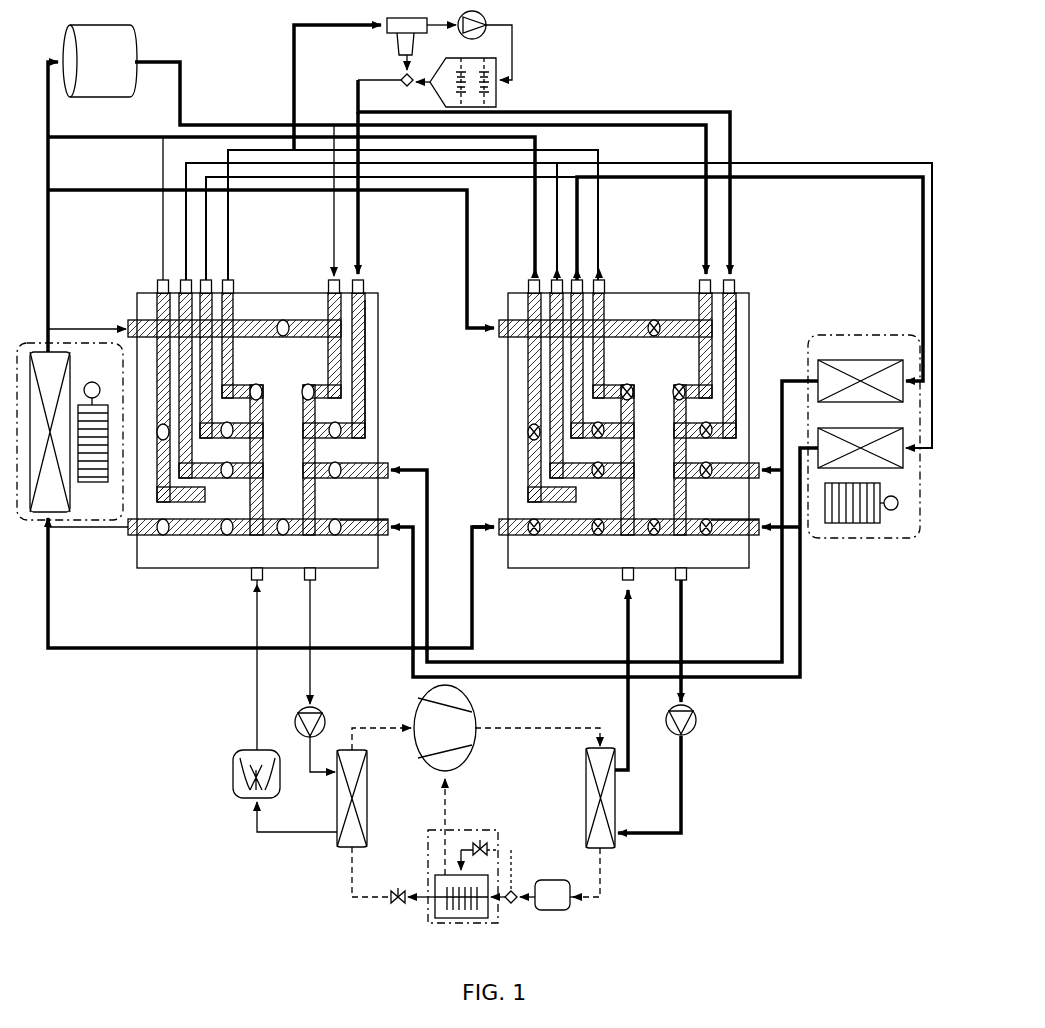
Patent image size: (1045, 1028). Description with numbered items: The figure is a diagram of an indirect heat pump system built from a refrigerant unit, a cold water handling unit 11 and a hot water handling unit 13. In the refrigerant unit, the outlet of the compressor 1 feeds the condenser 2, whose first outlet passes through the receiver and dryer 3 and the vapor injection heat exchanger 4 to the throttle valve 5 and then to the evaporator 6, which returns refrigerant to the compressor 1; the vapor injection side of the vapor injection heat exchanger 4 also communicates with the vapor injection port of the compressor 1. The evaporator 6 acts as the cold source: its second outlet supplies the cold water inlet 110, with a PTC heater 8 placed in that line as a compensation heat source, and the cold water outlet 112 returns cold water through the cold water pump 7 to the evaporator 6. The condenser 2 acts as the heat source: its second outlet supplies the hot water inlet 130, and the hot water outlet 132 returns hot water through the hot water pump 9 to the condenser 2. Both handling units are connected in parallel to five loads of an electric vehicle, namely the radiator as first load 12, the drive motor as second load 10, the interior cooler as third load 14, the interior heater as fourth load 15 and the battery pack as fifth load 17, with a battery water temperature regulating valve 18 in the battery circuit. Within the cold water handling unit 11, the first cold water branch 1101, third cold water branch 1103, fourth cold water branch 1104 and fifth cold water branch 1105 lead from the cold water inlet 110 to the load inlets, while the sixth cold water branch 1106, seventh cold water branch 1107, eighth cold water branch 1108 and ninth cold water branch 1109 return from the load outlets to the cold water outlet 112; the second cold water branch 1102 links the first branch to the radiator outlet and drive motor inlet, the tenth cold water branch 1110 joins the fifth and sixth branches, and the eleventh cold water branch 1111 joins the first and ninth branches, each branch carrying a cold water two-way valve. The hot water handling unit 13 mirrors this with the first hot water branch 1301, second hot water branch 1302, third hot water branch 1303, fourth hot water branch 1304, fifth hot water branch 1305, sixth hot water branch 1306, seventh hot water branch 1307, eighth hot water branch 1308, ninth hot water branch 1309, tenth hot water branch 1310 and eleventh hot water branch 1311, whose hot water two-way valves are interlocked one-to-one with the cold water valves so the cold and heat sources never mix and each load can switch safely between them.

The compressor 1 is at (450, 728).
The condenser 2 is at (592, 798).
The receiver and dryer 3 is at (552, 912).
The vapor injection heat exchanger 4 is at (472, 887).
The throttle valve 5 is at (398, 916).
The evaporator 6 is at (358, 798).
The cold water pump 7 is at (301, 719).
The PTC heater 8 is at (263, 774).
The hot water pump 9 is at (675, 713).
The second load 10 is at (111, 63).
The cold water handling unit 11 is at (255, 420).
The first load 12 is at (70, 431).
The hot water handling unit 13 is at (627, 423).
The third load 14 is at (861, 467).
The fourth load 15 is at (864, 436).
The fifth load 17 is at (466, 82).
The battery water temperature regulating valve 18 is at (432, 48).
The cold water inlet 110 is at (269, 580).
The cold water outlet 112 is at (323, 580).
The hot water inlet 130 is at (640, 580).
The hot water outlet 132 is at (694, 580).
The first cold water branch 1101 is at (177, 556).
The second cold water branch 1102 is at (183, 505).
The third cold water branch 1103 is at (212, 480).
The fourth cold water branch 1104 is at (243, 440).
The fifth cold water branch 1105 is at (247, 320).
The sixth cold water branch 1106 is at (330, 355).
The seventh cold water branch 1107 is at (378, 340).
The eighth cold water branch 1108 is at (366, 468).
The ninth cold water branch 1109 is at (364, 530).
The tenth cold water branch 1110 is at (317, 362).
The eleventh cold water branch 1111 is at (297, 536).
The first hot water branch 1301 is at (548, 556).
The second hot water branch 1302 is at (555, 505).
The third hot water branch 1303 is at (585, 480).
The fourth hot water branch 1304 is at (616, 440).
The fifth hot water branch 1305 is at (612, 320).
The sixth hot water branch 1306 is at (700, 355).
The seventh hot water branch 1307 is at (734, 380).
The eighth hot water branch 1308 is at (740, 474).
The ninth hot water branch 1309 is at (730, 526).
The tenth hot water branch 1310 is at (690, 345).
The eleventh hot water branch 1311 is at (668, 536).